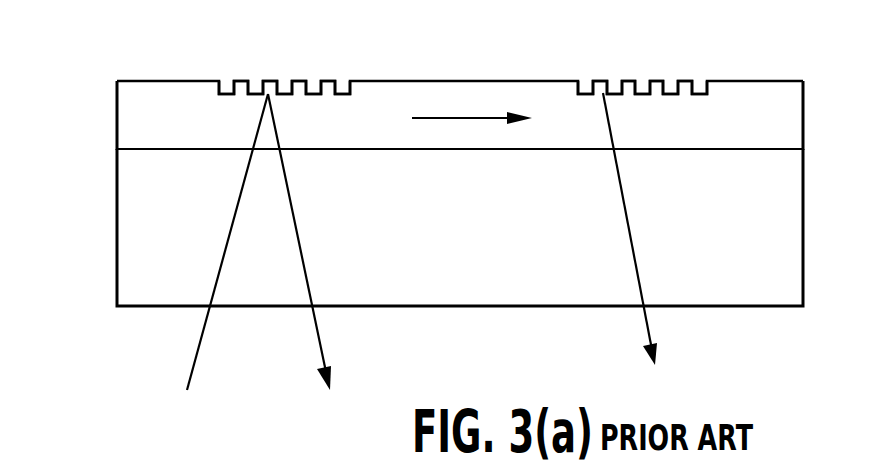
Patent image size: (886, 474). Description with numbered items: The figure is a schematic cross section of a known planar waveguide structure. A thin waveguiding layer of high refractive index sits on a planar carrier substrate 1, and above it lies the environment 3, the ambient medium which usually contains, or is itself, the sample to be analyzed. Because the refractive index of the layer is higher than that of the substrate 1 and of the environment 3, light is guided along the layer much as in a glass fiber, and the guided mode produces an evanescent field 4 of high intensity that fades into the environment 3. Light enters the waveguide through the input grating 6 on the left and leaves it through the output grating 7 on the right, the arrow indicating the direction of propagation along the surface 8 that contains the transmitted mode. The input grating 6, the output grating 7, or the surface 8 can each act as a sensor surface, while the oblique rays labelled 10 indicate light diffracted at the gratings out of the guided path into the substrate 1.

The substrate 1 is at (133, 242).
The environment 3 is at (153, 62).
The field 4 is at (152, 122).
The input grating 6 is at (240, 80).
The output grating 7 is at (655, 85).
The surface containing the transmitted mode 8 is at (470, 80).
The diffracted light beams 10 is at (422, 241).